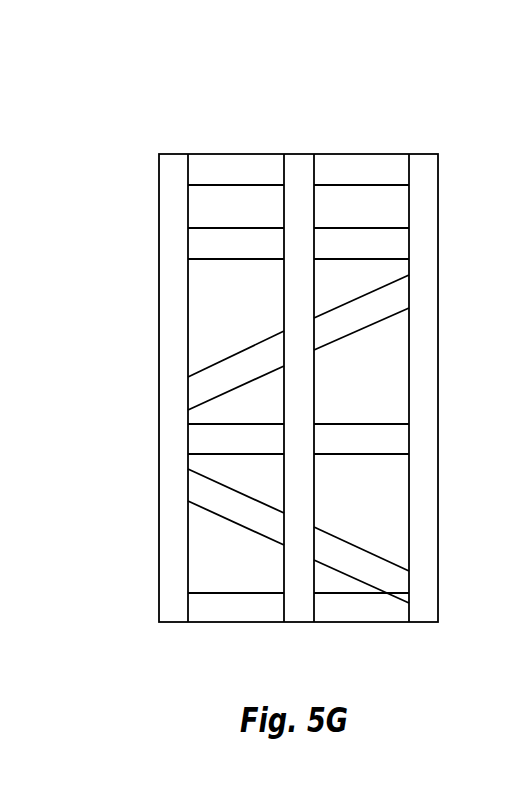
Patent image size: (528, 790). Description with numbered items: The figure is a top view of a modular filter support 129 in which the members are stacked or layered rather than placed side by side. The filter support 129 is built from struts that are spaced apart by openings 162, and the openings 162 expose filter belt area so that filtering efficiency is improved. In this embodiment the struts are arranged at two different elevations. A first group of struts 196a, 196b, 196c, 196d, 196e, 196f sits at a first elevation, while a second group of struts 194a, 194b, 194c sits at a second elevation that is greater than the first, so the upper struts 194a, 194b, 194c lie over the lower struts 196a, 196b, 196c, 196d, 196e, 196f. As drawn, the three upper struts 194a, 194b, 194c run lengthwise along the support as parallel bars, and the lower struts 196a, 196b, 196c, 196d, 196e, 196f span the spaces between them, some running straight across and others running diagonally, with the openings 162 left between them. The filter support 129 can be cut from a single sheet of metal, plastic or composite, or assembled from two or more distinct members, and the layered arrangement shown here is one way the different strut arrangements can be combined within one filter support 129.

The filter support 129 is at (209, 85).
The opening 162 is at (444, 360).
The strut 194a is at (173, 295).
The strut 194b is at (303, 160).
The strut 194c is at (425, 525).
The strut 196a is at (374, 168).
The strut 196b is at (228, 240).
The strut 196c is at (377, 309).
The strut 196d is at (364, 447).
The strut 196e is at (241, 516).
The strut 196f is at (225, 612).